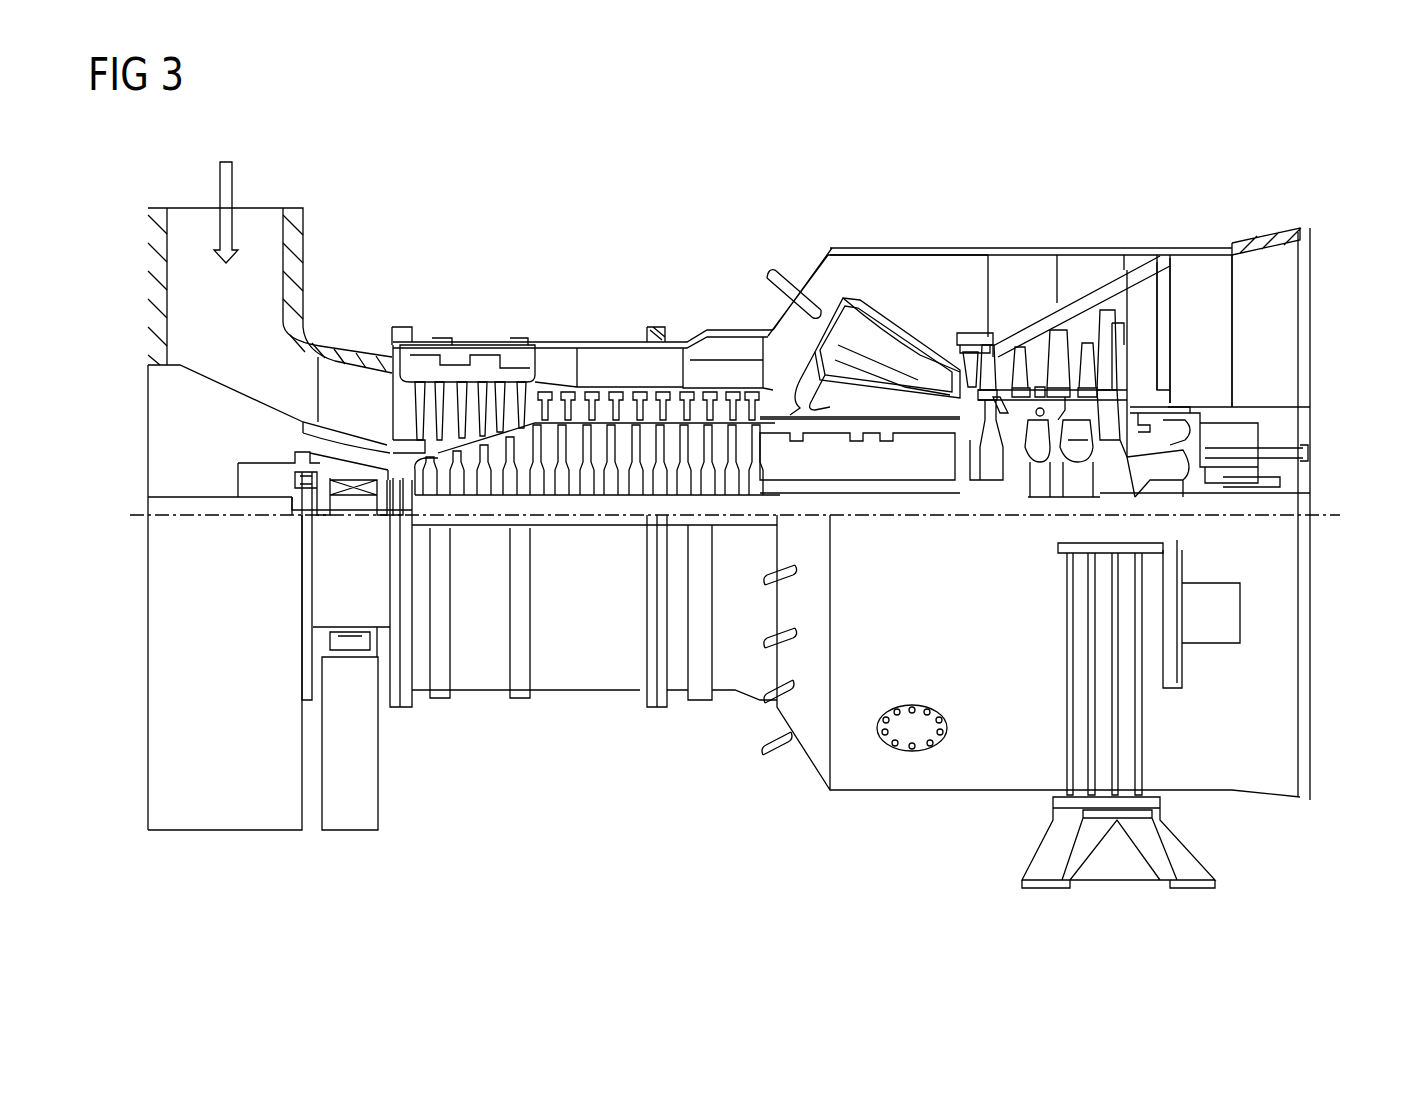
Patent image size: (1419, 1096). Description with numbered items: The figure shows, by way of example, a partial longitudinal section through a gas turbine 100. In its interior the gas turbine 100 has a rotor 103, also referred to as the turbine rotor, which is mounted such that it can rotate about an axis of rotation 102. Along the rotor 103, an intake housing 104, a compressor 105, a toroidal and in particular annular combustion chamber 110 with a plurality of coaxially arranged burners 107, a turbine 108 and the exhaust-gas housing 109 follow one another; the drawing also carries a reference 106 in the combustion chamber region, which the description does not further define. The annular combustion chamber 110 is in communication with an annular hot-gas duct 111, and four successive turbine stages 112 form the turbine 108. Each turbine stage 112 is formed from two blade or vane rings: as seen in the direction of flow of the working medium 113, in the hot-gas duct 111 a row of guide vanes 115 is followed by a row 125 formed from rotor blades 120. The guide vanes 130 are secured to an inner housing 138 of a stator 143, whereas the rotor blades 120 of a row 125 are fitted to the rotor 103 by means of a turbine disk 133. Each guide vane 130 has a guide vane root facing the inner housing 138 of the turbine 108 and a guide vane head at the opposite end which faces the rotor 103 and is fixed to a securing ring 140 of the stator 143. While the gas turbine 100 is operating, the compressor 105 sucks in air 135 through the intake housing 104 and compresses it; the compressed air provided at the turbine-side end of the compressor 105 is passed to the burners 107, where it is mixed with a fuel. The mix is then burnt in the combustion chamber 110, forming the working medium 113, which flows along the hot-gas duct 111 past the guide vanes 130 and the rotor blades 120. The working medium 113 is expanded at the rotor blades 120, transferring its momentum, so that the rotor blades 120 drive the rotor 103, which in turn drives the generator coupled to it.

The gas turbine 100 is at (571, 212).
The axis of rotation 102 is at (135, 513).
The rotor 103 is at (792, 478).
The intake housing 104 is at (296, 272).
The compressor 105 is at (495, 315).
The combustion chamber 106 is at (887, 337).
The burner 107 is at (768, 280).
The turbine 108 is at (992, 210).
The exhaust-gas housing 109 is at (1137, 333).
The combustion chamber 110 is at (860, 316).
The hot-gas duct 111 is at (1177, 327).
The turbine stage 112 is at (1118, 210).
The working medium 113 is at (853, 337).
The guide vane 115 is at (1080, 272).
The rotor blade 120 is at (1037, 407).
The row of rotor blades 125 is at (1140, 255).
The guide vane 130 is at (995, 365).
The turbine disk 133 is at (1150, 462).
The air 135 is at (233, 198).
The inner housing 138 is at (1020, 290).
The securing ring 140 is at (965, 395).
The stator 143 is at (960, 333).